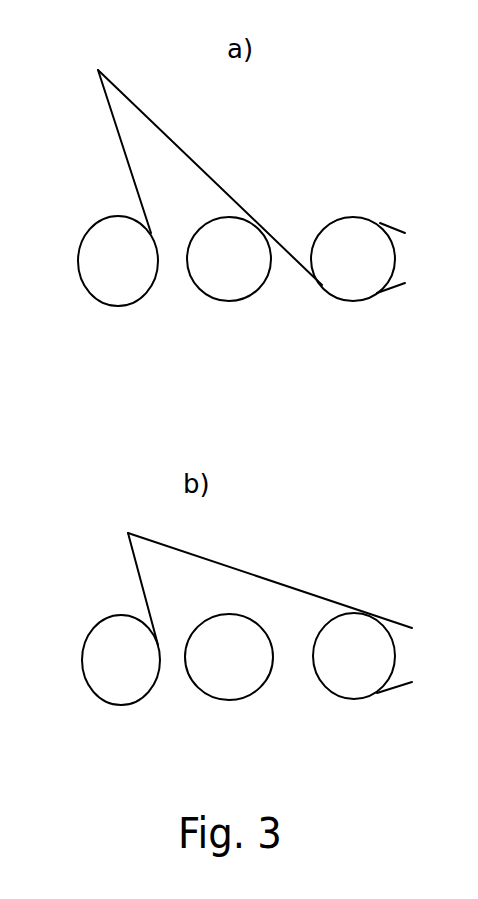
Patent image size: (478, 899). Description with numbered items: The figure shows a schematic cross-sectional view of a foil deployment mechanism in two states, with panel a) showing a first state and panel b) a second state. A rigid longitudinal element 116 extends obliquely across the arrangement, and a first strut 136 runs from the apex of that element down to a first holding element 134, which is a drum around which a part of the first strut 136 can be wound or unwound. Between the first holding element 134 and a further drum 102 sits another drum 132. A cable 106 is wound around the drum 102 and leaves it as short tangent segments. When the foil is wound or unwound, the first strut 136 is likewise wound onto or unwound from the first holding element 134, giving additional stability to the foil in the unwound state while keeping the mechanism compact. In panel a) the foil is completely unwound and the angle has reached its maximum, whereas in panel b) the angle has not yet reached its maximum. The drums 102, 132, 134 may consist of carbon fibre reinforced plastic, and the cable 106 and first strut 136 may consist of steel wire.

The drum 102 is at (330, 217).
The cable 106 is at (393, 230).
The rigid longitudinal element 116 is at (169, 137).
The drum 132 is at (230, 280).
The first holding element 134 is at (117, 287).
The first strut 136 is at (125, 158).